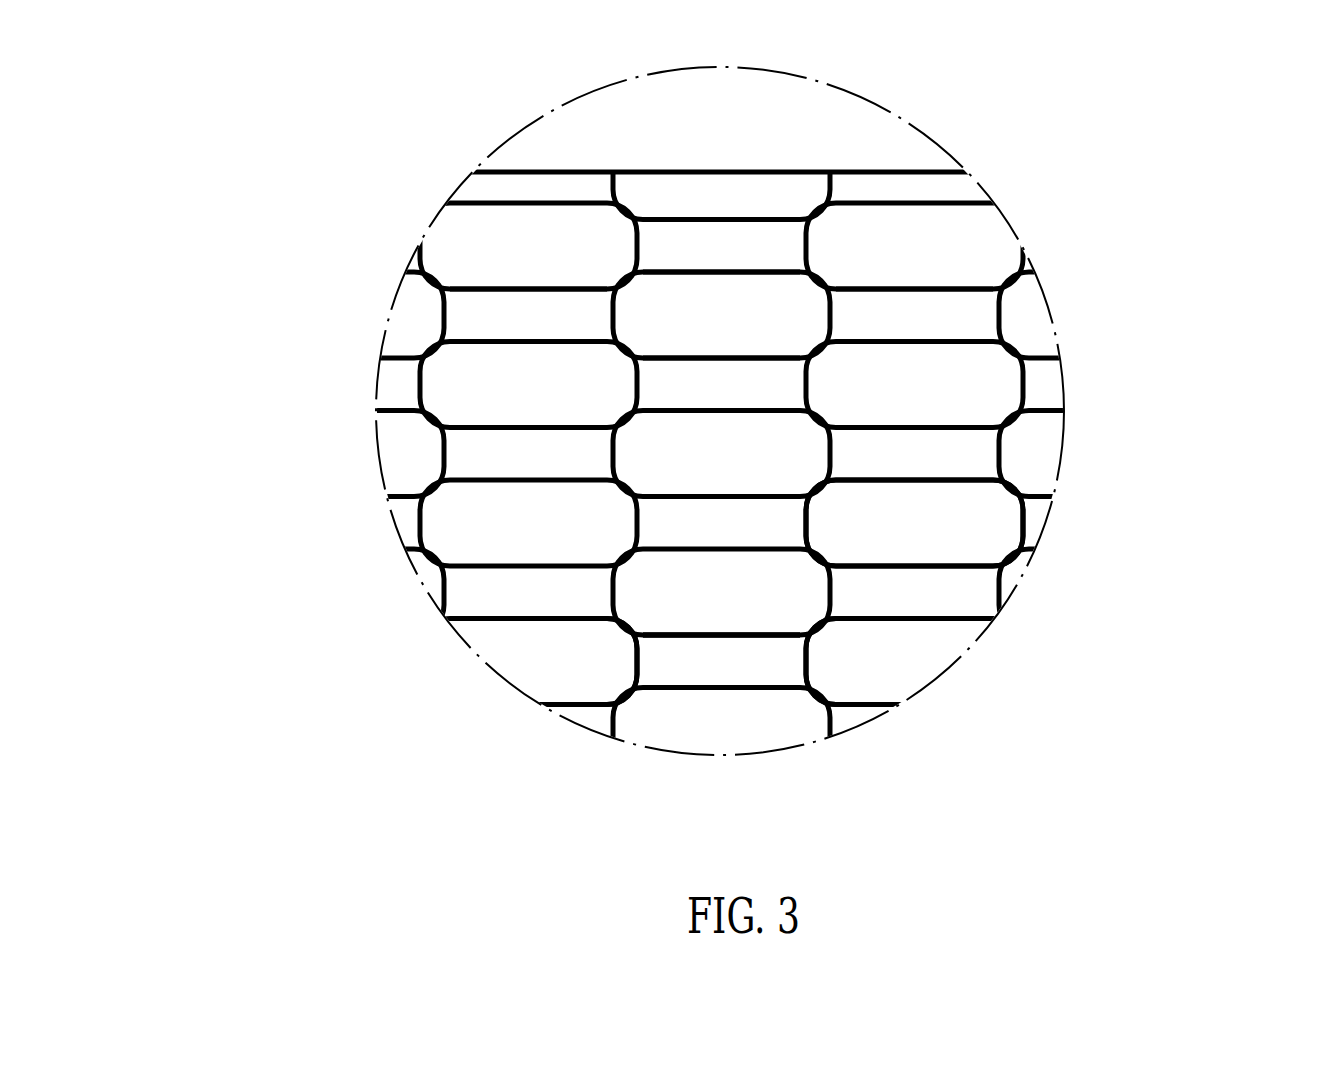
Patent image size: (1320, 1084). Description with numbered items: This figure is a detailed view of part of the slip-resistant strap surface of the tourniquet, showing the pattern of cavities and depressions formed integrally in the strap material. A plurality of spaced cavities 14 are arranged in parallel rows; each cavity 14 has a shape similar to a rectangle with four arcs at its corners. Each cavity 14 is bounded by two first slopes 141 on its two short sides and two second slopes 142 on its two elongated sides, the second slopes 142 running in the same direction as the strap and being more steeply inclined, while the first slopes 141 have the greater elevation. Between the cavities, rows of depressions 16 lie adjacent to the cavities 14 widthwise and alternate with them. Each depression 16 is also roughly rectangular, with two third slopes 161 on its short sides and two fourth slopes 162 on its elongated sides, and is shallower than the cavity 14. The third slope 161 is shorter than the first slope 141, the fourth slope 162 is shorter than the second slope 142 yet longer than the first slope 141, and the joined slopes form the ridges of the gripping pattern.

The cavity 14 is at (665, 298).
The depression 16 is at (482, 327).
The first slope 141 is at (808, 517).
The second slope 142 is at (930, 481).
The third slope 161 is at (803, 662).
The fourth slope 162 is at (677, 636).